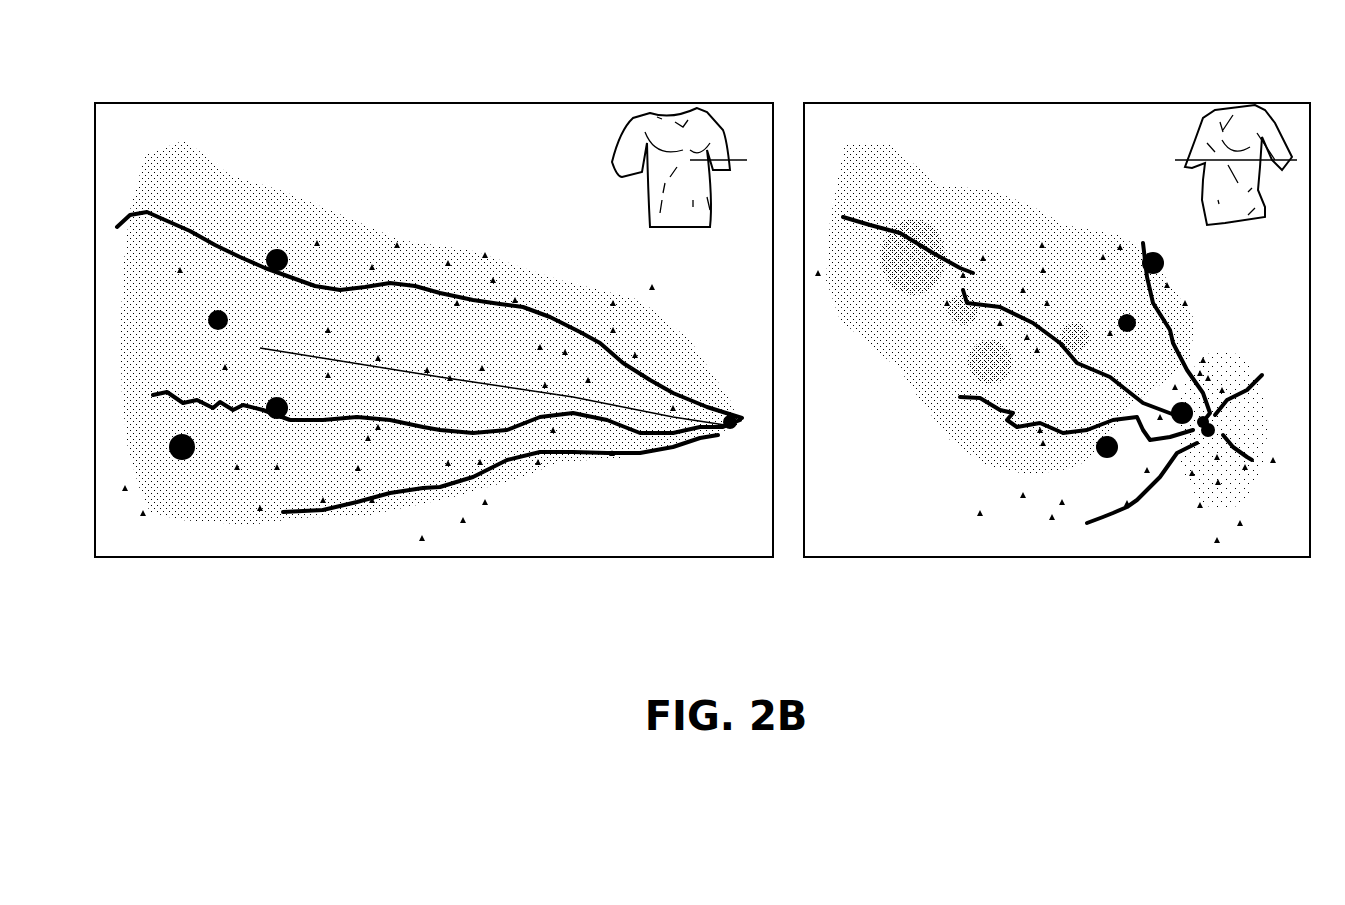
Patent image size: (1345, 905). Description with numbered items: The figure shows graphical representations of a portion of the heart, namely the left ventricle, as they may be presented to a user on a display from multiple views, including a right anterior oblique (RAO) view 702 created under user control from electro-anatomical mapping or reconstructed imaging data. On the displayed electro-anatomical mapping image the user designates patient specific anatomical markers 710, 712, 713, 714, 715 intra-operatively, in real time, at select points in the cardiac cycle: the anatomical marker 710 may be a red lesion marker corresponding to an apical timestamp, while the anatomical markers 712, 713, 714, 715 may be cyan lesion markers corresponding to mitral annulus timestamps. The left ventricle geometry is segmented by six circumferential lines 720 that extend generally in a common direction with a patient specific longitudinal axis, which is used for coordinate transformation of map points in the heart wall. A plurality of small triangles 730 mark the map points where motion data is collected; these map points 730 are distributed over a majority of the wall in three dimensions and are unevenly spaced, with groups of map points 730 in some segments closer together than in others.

The right anterior oblique (RAO) view 702 is at (328, 60).
The anatomical marker 710 is at (735, 422).
The anatomical marker 712 is at (195, 448).
The anatomical marker 713 is at (280, 405).
The anatomical marker 714 is at (217, 308).
The anatomical marker 715 is at (243, 247).
The circumferential line 720 is at (343, 280).
The triangle (map point) 730 is at (433, 320).